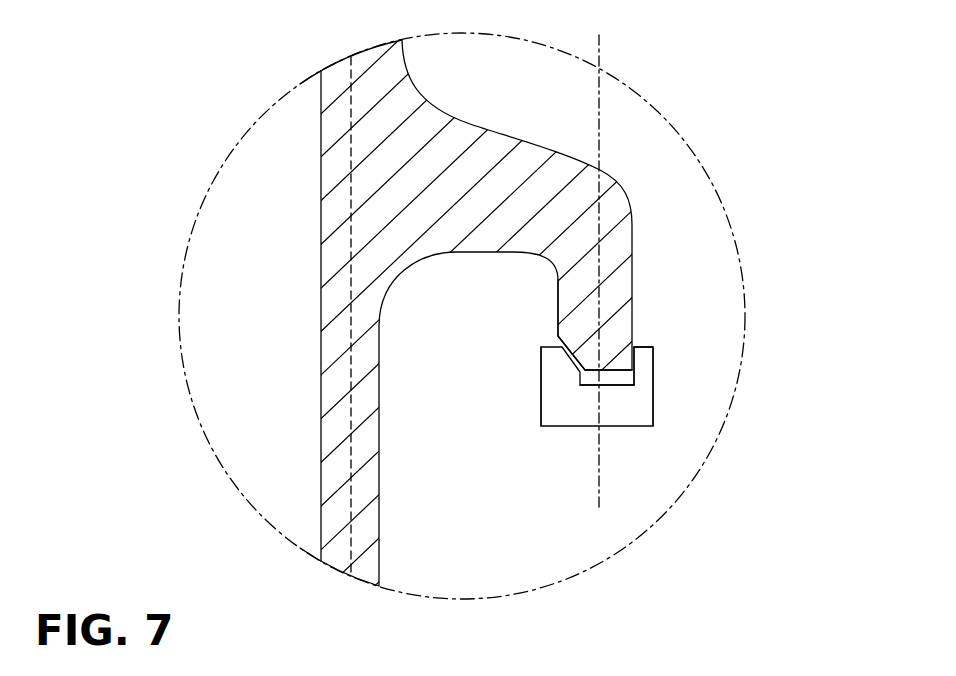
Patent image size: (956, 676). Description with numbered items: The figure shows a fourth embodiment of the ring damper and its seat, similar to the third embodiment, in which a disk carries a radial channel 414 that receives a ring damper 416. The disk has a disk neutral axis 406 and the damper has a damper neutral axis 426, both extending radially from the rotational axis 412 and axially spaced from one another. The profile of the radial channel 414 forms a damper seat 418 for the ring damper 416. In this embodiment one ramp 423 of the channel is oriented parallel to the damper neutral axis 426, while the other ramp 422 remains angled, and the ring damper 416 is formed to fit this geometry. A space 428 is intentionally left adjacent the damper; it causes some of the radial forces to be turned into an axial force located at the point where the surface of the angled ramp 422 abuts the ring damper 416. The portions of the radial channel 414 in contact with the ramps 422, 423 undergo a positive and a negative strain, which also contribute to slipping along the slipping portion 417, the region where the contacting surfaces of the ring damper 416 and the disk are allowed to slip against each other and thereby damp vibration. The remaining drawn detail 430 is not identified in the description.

The rotational axis 412 is at (618, 115).
The disk neutral axis 406 is at (351, 330).
The damper neutral axis 426 is at (598, 466).
The ramp 422 is at (558, 336).
The slipping portion 417 is at (568, 350).
The radial channel 414 is at (572, 377).
The ring damper 416 is at (548, 397).
The damper seat 418 is at (635, 380).
The ramp 423 is at (636, 373).
The space 428 is at (606, 376).
The seat bottom surface 430 is at (591, 386).